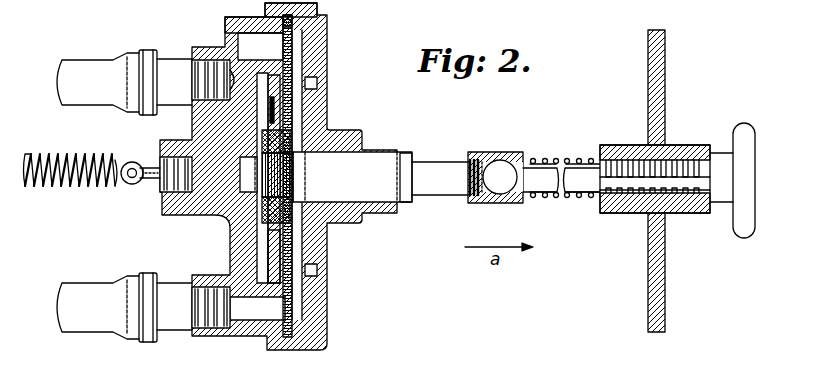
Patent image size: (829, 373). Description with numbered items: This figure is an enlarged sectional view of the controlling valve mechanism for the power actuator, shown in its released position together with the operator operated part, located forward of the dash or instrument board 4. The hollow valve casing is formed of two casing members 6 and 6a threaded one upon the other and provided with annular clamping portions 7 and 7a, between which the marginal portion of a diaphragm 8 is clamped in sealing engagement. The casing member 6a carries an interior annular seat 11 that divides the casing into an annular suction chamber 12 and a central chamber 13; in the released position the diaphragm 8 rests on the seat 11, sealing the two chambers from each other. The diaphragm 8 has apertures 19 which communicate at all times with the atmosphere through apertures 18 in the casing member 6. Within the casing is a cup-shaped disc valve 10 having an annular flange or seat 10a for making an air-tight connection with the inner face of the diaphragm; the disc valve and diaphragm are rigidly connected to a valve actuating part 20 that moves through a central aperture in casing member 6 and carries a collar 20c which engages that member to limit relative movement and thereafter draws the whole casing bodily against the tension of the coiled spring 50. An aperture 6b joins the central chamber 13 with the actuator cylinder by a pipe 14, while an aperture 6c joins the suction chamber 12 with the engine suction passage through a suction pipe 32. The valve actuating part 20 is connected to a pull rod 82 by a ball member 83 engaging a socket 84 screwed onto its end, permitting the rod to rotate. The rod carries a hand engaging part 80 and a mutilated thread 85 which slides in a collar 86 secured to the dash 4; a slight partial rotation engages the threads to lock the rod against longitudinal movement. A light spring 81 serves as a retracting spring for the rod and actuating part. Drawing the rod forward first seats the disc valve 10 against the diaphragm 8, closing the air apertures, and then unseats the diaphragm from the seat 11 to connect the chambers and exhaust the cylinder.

The dash or instrument board 4 is at (658, 86).
The casing member 6 is at (328, 30).
The casing member 6a is at (240, 25).
The aperture 6b is at (234, 78).
The aperture 6c is at (213, 328).
The annular clamping portion 7 is at (290, 16).
The annular clamping portion 7a is at (275, 14).
The diaphragm 8 is at (292, 50).
The cup-shaped disc valve 10 is at (268, 228).
The annular flange or seat 10a is at (277, 273).
The annular seat 11 is at (260, 45).
The annular suction chamber 12 is at (262, 322).
The central chamber 13 is at (257, 112).
The pipe 14 is at (62, 78).
The apertures 18 is at (318, 83).
The apertures 19 is at (283, 112).
The valve actuating part 20 is at (425, 170).
The collar 20c is at (300, 222).
The suction pipe 32 is at (80, 288).
The coiled spring 50 is at (76, 154).
The hand engaging part 80 is at (742, 130).
The spring 81 is at (548, 200).
The pull rod 82 is at (582, 170).
The ball member 83 is at (503, 192).
The socket 84 is at (503, 152).
The mutilated thread 85 is at (633, 180).
The collar 86 is at (645, 200).